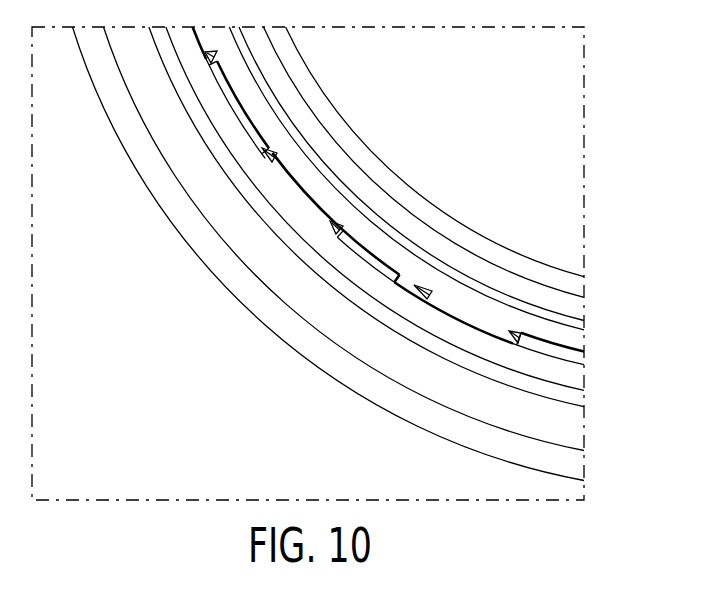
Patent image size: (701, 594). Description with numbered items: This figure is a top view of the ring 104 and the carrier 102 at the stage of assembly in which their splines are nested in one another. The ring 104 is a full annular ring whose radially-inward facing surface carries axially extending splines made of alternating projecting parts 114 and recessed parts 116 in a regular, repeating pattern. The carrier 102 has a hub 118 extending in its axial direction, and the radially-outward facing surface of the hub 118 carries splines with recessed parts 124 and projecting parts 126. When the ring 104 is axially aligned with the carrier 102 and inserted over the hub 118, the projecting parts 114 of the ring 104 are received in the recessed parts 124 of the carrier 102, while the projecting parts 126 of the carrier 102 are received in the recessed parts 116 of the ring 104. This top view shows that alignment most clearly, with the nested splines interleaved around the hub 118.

The carrier 102 is at (409, 488).
The ring 104 is at (568, 426).
The projecting parts 114 is at (376, 263).
The recessed parts 116 is at (460, 317).
The hub 118 is at (459, 257).
The recessed parts 124 is at (392, 275).
The projecting parts 126 is at (492, 320).